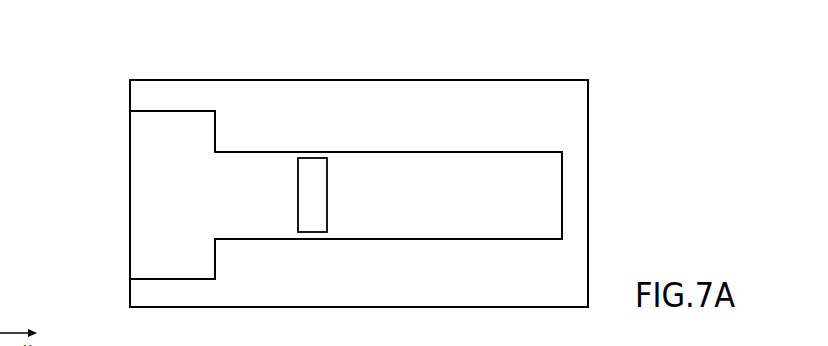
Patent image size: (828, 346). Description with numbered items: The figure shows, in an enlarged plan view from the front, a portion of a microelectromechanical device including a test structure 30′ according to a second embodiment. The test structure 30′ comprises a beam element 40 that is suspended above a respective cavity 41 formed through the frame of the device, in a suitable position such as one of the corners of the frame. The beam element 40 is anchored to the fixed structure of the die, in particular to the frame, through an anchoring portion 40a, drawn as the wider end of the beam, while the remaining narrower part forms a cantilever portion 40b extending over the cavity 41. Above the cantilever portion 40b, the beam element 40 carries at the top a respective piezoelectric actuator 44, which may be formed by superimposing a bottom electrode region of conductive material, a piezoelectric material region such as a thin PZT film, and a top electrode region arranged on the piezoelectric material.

The test structure 30′ is at (600, 174).
The cavity 41 is at (199, 88).
The beam element 40 is at (387, 150).
The anchoring portion 40a is at (145, 169).
The cantilever portion 40b is at (427, 222).
The piezoelectric actuator 44 is at (313, 172).